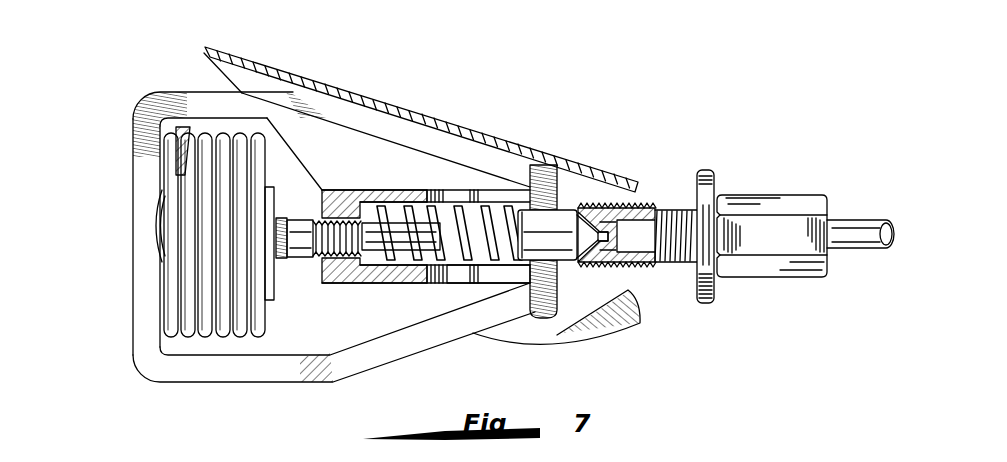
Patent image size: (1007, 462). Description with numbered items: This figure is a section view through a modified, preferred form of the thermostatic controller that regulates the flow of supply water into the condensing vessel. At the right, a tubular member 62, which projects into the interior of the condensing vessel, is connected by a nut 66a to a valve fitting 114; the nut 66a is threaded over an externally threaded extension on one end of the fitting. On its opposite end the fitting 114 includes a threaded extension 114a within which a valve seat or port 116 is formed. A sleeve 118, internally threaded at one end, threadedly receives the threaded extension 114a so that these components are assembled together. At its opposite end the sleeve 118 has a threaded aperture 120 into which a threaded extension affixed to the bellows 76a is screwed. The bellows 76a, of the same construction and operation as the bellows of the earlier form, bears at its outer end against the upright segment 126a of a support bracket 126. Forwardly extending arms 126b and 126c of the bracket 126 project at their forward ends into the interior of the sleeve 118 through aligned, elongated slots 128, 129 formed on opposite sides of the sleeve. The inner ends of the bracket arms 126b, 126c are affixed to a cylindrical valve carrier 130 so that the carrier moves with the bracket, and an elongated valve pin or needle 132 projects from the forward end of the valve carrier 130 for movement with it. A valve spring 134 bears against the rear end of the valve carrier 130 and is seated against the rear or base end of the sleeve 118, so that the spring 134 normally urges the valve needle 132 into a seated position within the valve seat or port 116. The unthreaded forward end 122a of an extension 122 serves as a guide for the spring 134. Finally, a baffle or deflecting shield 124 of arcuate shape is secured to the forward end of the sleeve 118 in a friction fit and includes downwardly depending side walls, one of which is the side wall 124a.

The tubular member 62 is at (863, 250).
The nut 66a is at (813, 198).
The bellows 76a is at (165, 314).
The valve fitting 114 is at (705, 304).
The threaded extension 114a is at (660, 217).
The valve seat or port 116 is at (604, 230).
The sleeve 118 is at (327, 190).
The threaded aperture 120 is at (343, 284).
The extension 122 is at (316, 256).
The unthreaded forward end 122a is at (387, 251).
The baffle or deflecting shield 124 is at (381, 196).
The side wall 124a is at (532, 360).
The support bracket 126 is at (292, 260).
The upright segment 126a is at (133, 140).
The forwardly extending arm 126b is at (356, 370).
The forwardly extending arm 126c is at (200, 92).
The elongated slot 128 is at (452, 192).
The elongated slot 129 is at (447, 274).
The cylindrical valve carrier 130 is at (565, 212).
The valve pin or needle 132 is at (608, 243).
The valve spring 134 is at (382, 208).